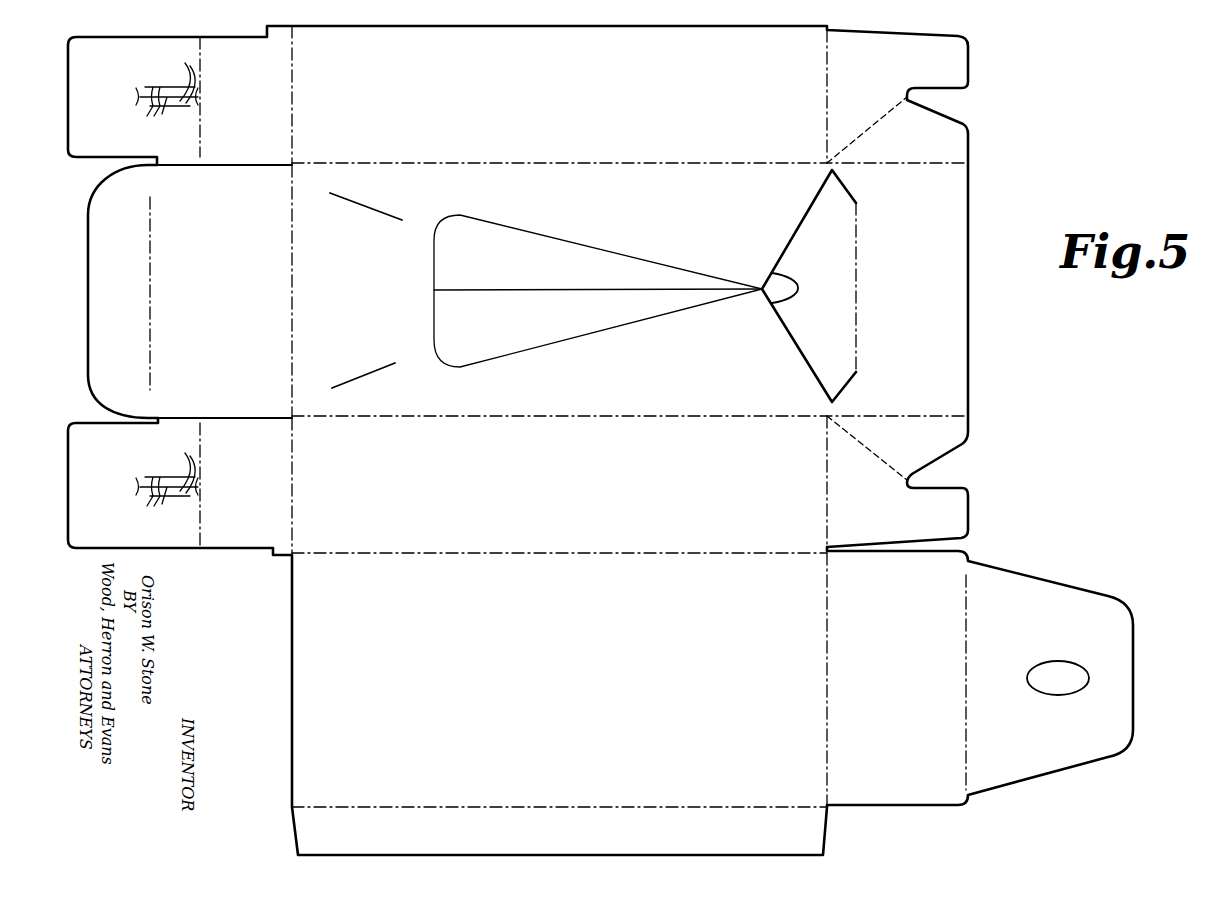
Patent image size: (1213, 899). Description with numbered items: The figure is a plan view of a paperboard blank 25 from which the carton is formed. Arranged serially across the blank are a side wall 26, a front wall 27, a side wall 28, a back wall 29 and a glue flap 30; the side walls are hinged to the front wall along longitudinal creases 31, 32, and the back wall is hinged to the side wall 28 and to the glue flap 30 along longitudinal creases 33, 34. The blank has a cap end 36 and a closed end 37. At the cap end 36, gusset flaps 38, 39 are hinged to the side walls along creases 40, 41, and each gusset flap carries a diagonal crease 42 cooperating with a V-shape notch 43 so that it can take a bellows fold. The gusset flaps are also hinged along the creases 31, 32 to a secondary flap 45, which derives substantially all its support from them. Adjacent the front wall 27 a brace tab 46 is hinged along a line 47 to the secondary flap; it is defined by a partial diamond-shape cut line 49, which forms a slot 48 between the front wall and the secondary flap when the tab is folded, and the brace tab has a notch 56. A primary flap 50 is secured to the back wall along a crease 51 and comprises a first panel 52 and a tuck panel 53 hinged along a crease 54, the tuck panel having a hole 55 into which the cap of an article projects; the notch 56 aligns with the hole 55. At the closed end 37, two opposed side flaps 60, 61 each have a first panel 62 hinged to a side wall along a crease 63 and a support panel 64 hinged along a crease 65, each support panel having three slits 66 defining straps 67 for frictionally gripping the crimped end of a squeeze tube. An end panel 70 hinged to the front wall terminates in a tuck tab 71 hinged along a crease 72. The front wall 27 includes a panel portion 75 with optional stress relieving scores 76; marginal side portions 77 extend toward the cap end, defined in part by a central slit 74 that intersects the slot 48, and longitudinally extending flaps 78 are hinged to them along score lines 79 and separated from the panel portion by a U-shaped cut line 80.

The paperboard blank 25 is at (1137, 366).
The side wall 26 is at (559, 94).
The front wall 27 is at (559, 290).
The side wall 28 is at (559, 484).
The back wall 29 is at (559, 680).
The glue flap 30 is at (559, 831).
The longitudinal crease 31 is at (612, 163).
The longitudinal crease 32 is at (620, 416).
The longitudinal crease 33 is at (615, 554).
The longitudinal crease 34 is at (638, 808).
The cap end 36 is at (985, 413).
The closed end 37 is at (85, 390).
The gusset flap 38 is at (897, 59).
The gusset flap 39 is at (897, 518).
The crease 40 is at (827, 72).
The crease 41 is at (827, 467).
The diagonal crease 42 is at (870, 118).
The V-shape notch 43 is at (946, 98).
The secondary flap 45 is at (912, 289).
The brace tab 46 is at (809, 286).
The hinge line 47 is at (856, 316).
The slot 48 is at (797, 232).
The partial diamond-shape cut line 49 is at (805, 365).
The primary flap 50 is at (1023, 563).
The crease 51 is at (827, 652).
The first panel 52 is at (897, 678).
The tuck panel 53 is at (1050, 678).
The crease 54 is at (966, 712).
The hole 55 is at (1068, 692).
The notch 56 is at (810, 290).
The side flap 60 is at (246, 95).
The side flap 61 is at (246, 486).
The first panel 62 is at (268, 129).
The crease 63 is at (292, 60).
The support panel 64 is at (134, 292).
The crease 65 is at (200, 133).
The slits 66 is at (167, 308).
The straps 67 is at (180, 273).
The end panel 70 is at (272, 279).
The tuck tab 71 is at (130, 294).
The crease 72 is at (152, 253).
The central slit 74 is at (516, 292).
The panel portion 75 is at (365, 290).
The stress relieving scores 76 is at (372, 200).
The marginal side portions 77 is at (643, 290).
The longitudinally extending flaps 78 is at (598, 291).
The score lines 79 is at (600, 253).
The U-shaped cut line 80 is at (434, 269).